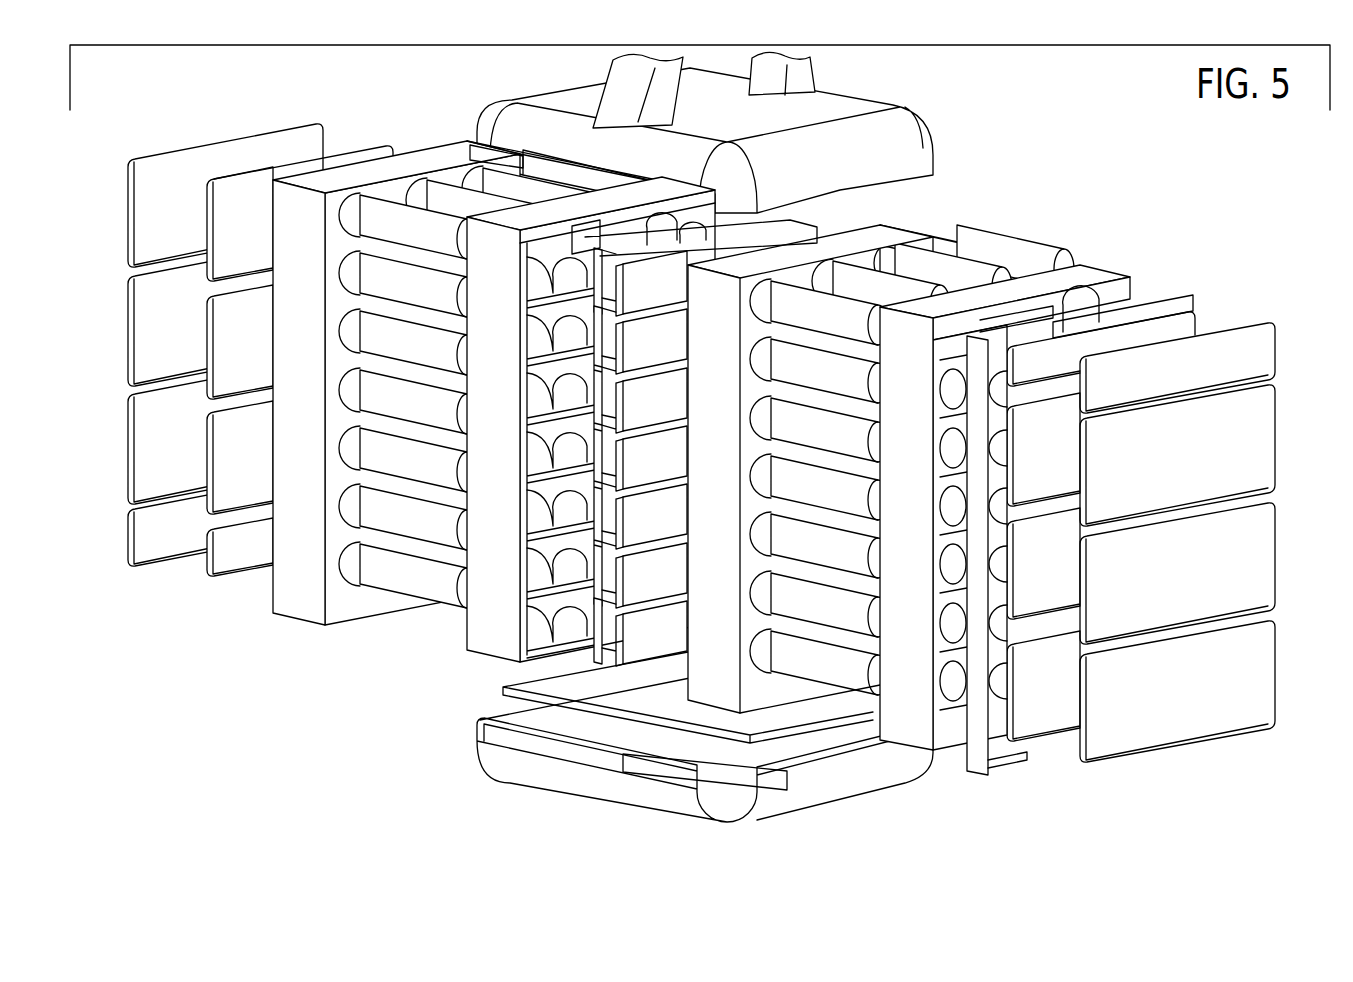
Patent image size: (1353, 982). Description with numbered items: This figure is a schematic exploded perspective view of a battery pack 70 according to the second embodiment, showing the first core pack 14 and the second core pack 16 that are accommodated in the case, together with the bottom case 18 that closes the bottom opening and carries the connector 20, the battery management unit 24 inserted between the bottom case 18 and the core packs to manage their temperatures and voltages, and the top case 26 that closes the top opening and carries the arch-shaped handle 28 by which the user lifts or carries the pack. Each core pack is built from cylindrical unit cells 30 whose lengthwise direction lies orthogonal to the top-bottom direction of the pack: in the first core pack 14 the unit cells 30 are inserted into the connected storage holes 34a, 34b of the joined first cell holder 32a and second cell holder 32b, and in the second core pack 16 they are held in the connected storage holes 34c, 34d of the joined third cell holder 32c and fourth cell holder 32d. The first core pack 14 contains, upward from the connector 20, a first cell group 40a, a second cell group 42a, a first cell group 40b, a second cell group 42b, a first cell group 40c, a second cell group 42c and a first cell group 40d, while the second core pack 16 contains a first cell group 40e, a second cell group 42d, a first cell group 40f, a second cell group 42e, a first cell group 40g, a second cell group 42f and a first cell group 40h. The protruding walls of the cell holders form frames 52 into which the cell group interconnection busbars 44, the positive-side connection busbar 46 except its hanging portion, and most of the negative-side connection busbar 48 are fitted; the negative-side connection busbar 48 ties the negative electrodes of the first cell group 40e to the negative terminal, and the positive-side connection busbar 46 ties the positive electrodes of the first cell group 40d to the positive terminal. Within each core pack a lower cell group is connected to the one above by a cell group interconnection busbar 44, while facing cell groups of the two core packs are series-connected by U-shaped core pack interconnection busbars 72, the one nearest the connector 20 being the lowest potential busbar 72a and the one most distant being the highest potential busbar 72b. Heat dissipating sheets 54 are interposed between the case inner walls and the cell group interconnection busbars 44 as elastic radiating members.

The first core pack 14 is at (1152, 233).
The second core pack 16 is at (161, 607).
The bottom case 18 is at (884, 780).
The connector 20 is at (677, 753).
The battery management unit 24 is at (500, 690).
The top case 26 is at (928, 138).
The handle 28 is at (806, 75).
The unit cell 30 is at (432, 192).
The first cell holder 32a is at (1130, 272).
The second cell holder 32b is at (927, 234).
The third cell holder 32c is at (462, 656).
The fourth cell holder 32d is at (283, 600).
The storage hole 34a is at (1073, 300).
The storage hole 34b is at (890, 240).
The storage hole 34c is at (663, 228).
The storage hole 34d is at (467, 148).
The first cell group 40a is at (746, 655).
The first cell group 40b is at (746, 538).
The first cell group 40c is at (746, 422).
The first cell group 40d is at (746, 305).
The first cell group 40e is at (335, 568).
The first cell group 40f is at (335, 452).
The first cell group 40g is at (335, 335).
The first cell group 40h is at (335, 219).
The second cell group 42a is at (746, 597).
The second cell group 42b is at (746, 480).
The second cell group 42c is at (746, 363).
The second cell group 42d is at (335, 510).
The second cell group 42e is at (335, 394).
The second cell group 42f is at (335, 277).
The cell group interconnection busbar 44 is at (212, 439).
The positive-side connection busbar 46 is at (1188, 318).
The negative-side connection busbar 48 is at (218, 572).
The frame 52 is at (585, 236).
The heat dissipating sheet 54 is at (134, 534).
The battery pack 70 is at (1207, 151).
The core pack interconnection busbar 72 is at (603, 563).
The lowest potential busbar 72a is at (603, 620).
The highest potential busbar 72b is at (603, 270).